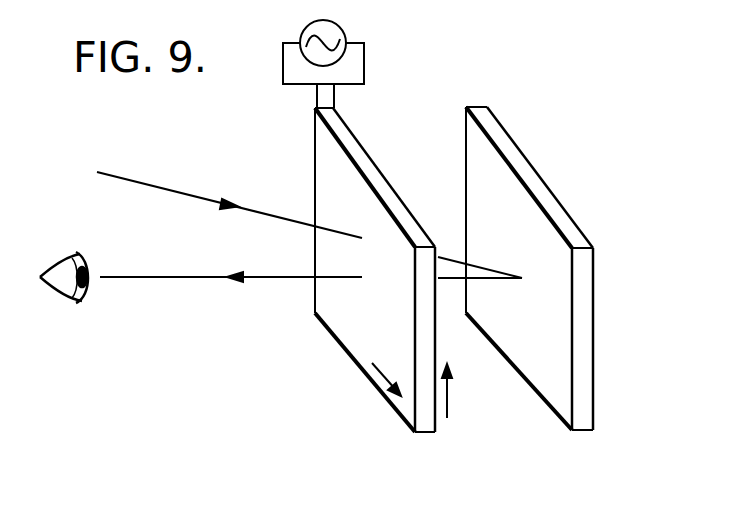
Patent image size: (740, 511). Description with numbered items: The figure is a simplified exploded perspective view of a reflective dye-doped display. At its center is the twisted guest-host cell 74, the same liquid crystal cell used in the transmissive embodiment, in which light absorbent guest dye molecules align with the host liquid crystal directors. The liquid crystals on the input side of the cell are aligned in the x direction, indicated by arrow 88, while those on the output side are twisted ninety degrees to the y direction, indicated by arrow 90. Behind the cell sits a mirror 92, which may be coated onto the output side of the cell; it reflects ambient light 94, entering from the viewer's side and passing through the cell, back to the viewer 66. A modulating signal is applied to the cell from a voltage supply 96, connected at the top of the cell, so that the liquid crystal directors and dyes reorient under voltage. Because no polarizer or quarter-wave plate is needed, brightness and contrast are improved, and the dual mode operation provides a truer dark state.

The viewer 66 is at (78, 254).
The twisted guest-host cell 74 is at (427, 433).
The arrow 88 is at (384, 383).
The arrow 90 is at (448, 392).
The mirror 92 is at (592, 345).
The ambient light 94 is at (173, 190).
The voltage supply 96 is at (307, 27).